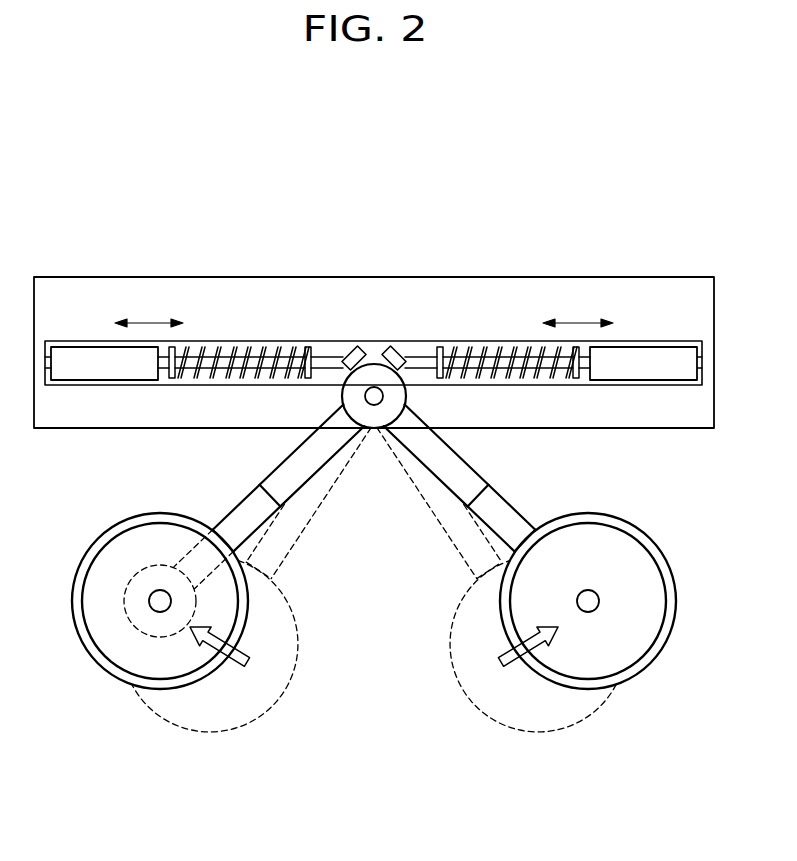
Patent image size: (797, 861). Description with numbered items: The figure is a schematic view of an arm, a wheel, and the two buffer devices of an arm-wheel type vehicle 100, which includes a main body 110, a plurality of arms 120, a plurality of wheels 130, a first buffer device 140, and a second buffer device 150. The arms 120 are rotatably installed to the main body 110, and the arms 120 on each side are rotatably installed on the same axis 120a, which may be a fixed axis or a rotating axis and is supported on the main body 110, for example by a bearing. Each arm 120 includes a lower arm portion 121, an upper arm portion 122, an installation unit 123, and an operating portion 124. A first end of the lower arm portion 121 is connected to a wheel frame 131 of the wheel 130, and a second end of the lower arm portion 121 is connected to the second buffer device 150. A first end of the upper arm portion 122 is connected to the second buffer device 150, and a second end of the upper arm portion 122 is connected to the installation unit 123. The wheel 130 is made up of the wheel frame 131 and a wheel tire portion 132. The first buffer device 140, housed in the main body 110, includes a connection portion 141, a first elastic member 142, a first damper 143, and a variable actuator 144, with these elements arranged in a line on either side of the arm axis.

The arm-wheel type vehicle 100 is at (663, 193).
The main body 110 is at (710, 303).
The arm 120 is at (528, 497).
The axis 120a is at (385, 358).
The lower arm portion 121 is at (243, 515).
The upper arm portion 122 is at (317, 437).
The installation unit 123 is at (343, 395).
The operating portion 124 is at (374, 392).
The wheel 130 is at (83, 791).
The wheel frame 131 is at (127, 623).
The wheel tire portion 132 is at (172, 683).
The first buffer device 140 is at (327, 217).
The connection portion 141 is at (325, 357).
The first elastic member 142 is at (210, 360).
The first damper 143 is at (273, 357).
The variable actuator 144 is at (100, 352).
The second buffer device 150 is at (445, 472).